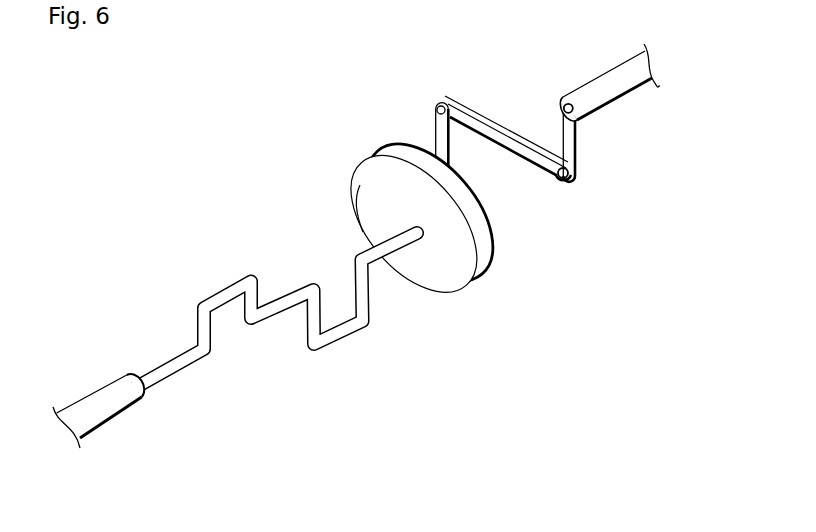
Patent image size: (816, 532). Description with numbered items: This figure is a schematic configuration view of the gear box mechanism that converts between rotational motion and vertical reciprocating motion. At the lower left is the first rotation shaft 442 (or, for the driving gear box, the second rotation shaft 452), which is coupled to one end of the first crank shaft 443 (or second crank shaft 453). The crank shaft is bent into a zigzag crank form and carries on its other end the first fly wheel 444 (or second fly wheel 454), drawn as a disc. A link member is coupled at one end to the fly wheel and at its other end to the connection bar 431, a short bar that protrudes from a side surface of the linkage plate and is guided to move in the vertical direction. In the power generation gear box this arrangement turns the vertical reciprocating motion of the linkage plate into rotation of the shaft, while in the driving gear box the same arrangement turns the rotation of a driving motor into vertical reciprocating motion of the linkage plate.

The connection bar 431 is at (620, 93).
The first rotation shaft 442 is at (120, 441).
The second rotation shaft 452 is at (117, 415).
The first crank shaft 443 is at (274, 330).
The second crank shaft 453 is at (307, 336).
The first fly wheel 444 is at (422, 251).
The second fly wheel 454 is at (445, 283).